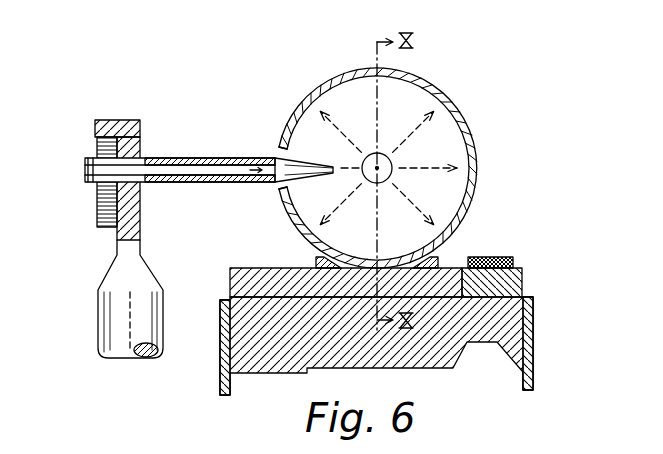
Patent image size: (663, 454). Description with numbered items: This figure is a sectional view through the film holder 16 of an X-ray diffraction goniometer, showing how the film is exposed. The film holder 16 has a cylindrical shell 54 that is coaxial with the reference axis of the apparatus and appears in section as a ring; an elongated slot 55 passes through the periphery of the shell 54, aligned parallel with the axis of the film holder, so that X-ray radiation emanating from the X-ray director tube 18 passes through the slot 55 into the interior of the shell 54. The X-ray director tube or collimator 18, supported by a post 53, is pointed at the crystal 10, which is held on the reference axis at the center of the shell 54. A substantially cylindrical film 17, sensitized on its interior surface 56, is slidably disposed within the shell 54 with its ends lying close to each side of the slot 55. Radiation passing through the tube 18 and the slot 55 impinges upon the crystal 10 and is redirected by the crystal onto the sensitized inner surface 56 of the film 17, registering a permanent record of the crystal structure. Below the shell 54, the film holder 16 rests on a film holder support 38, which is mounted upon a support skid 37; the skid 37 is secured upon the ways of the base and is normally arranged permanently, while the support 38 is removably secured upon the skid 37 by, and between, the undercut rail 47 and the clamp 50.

The crystal 10 is at (381, 166).
The film holder 16 is at (462, 99).
The film 17 is at (460, 126).
The X-ray director tube 18 is at (165, 160).
The support skid 37 is at (510, 338).
The film holder support 38 is at (452, 270).
The undercut rail 47 is at (244, 284).
The clamp 50 is at (518, 276).
The post 53 is at (125, 333).
The cylindrical shell 54 is at (474, 164).
The elongated slot 55 is at (274, 194).
The interior surface 56 is at (398, 89).